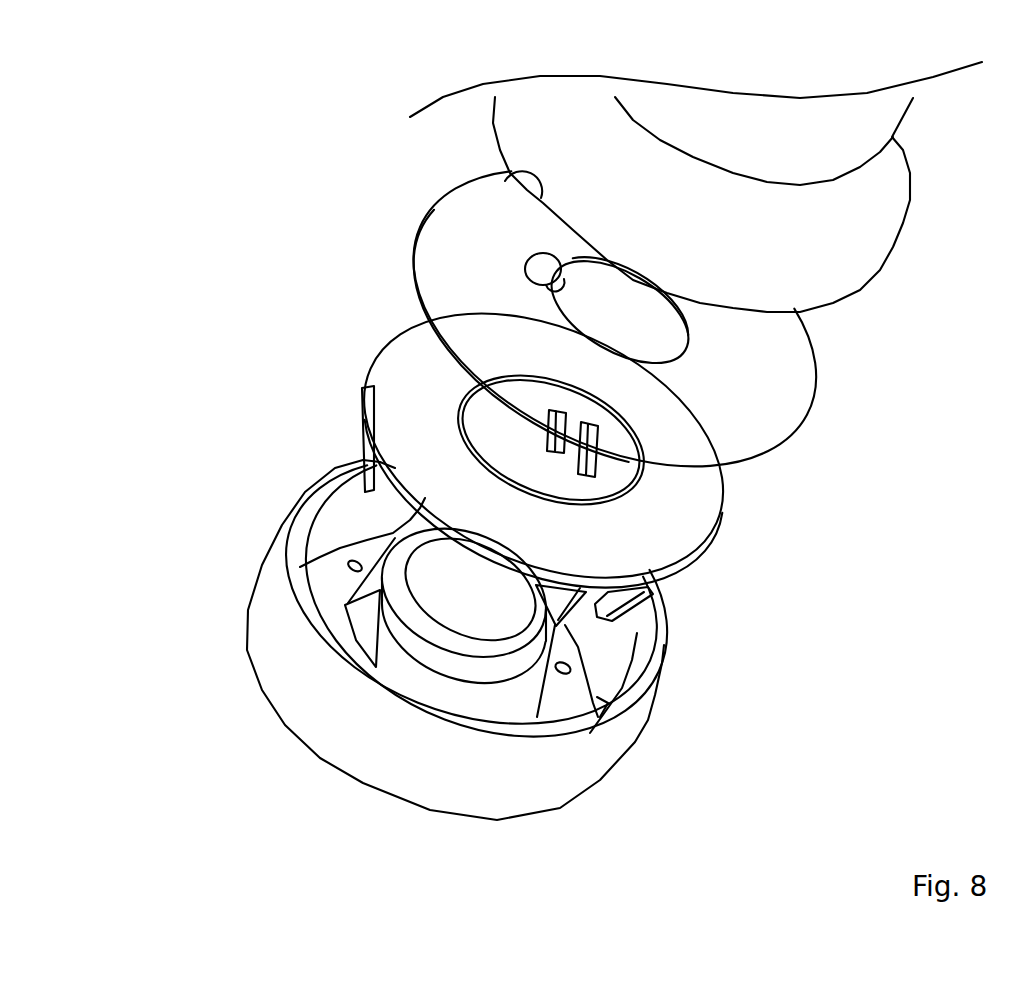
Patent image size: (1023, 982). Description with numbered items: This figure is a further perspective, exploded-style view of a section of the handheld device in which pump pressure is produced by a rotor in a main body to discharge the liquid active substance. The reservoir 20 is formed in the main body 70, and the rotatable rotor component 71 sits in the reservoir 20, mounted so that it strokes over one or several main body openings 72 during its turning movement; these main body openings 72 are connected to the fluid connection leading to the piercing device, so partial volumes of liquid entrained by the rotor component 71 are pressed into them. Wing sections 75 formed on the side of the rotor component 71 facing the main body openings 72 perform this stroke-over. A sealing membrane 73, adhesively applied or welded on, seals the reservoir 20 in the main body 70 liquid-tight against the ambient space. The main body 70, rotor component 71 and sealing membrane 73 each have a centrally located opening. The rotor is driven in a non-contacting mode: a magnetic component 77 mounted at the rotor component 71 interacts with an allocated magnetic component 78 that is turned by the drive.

The reservoir 20 is at (607, 635).
The main body 70 is at (438, 760).
The rotor component 71 is at (677, 533).
The main body openings 72 is at (353, 568).
The sealing membrane 73 is at (770, 400).
The wing sections 75 is at (547, 440).
The magnetic component 77 is at (548, 268).
The magnetic component 78 is at (512, 181).